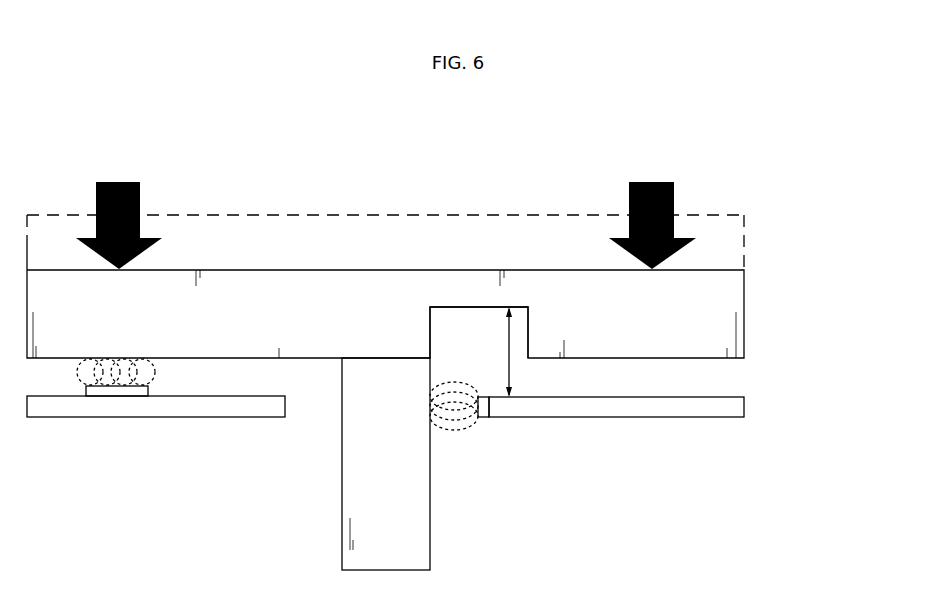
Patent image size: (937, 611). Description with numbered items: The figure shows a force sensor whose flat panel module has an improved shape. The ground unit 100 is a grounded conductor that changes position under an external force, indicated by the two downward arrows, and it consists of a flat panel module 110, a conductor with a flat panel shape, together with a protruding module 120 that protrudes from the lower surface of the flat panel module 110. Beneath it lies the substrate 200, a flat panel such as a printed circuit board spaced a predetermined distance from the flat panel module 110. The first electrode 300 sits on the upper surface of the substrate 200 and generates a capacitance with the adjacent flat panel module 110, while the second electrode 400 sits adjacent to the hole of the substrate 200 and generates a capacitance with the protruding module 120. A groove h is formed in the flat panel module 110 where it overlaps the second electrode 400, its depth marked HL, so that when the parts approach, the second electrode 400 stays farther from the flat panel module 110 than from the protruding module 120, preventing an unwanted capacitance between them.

The ground unit 100 is at (383, 166).
The flat panel module 110 is at (383, 278).
The protruding module 120 is at (357, 408).
The groove h is at (466, 336).
The height of recess HL is at (496, 352).
The substrate 200 is at (737, 408).
The first electrode 300 is at (110, 388).
The second electrode 400 is at (485, 410).